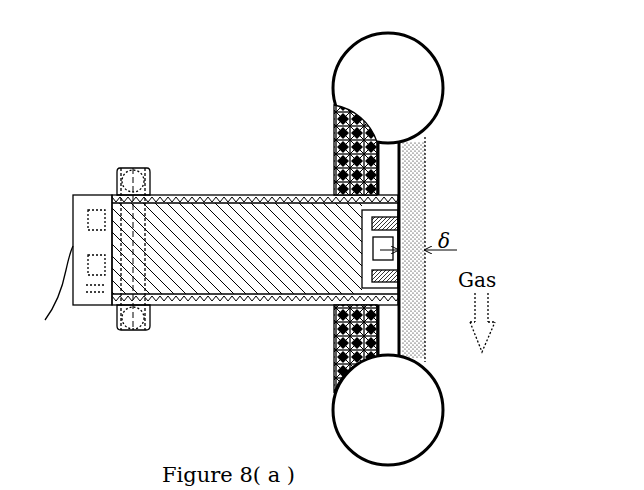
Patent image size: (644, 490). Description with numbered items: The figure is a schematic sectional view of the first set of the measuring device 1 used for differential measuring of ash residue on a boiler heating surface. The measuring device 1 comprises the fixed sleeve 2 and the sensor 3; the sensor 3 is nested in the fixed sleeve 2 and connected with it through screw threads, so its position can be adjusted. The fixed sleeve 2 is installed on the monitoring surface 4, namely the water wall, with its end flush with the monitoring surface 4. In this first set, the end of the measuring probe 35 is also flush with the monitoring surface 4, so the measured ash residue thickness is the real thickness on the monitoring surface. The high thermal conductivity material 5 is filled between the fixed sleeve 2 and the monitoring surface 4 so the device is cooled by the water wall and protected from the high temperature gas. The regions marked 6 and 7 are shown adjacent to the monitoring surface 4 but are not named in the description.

The measuring device 1 is at (266, 264).
The fixed sleeve 2 is at (242, 193).
The sensor 3 is at (102, 194).
The monitoring surface 4 is at (403, 175).
The high thermal conductivity material 5 is at (335, 152).
The gas passage 6 is at (426, 345).
The roller 7 is at (445, 412).
The measuring probe 35 is at (402, 232).